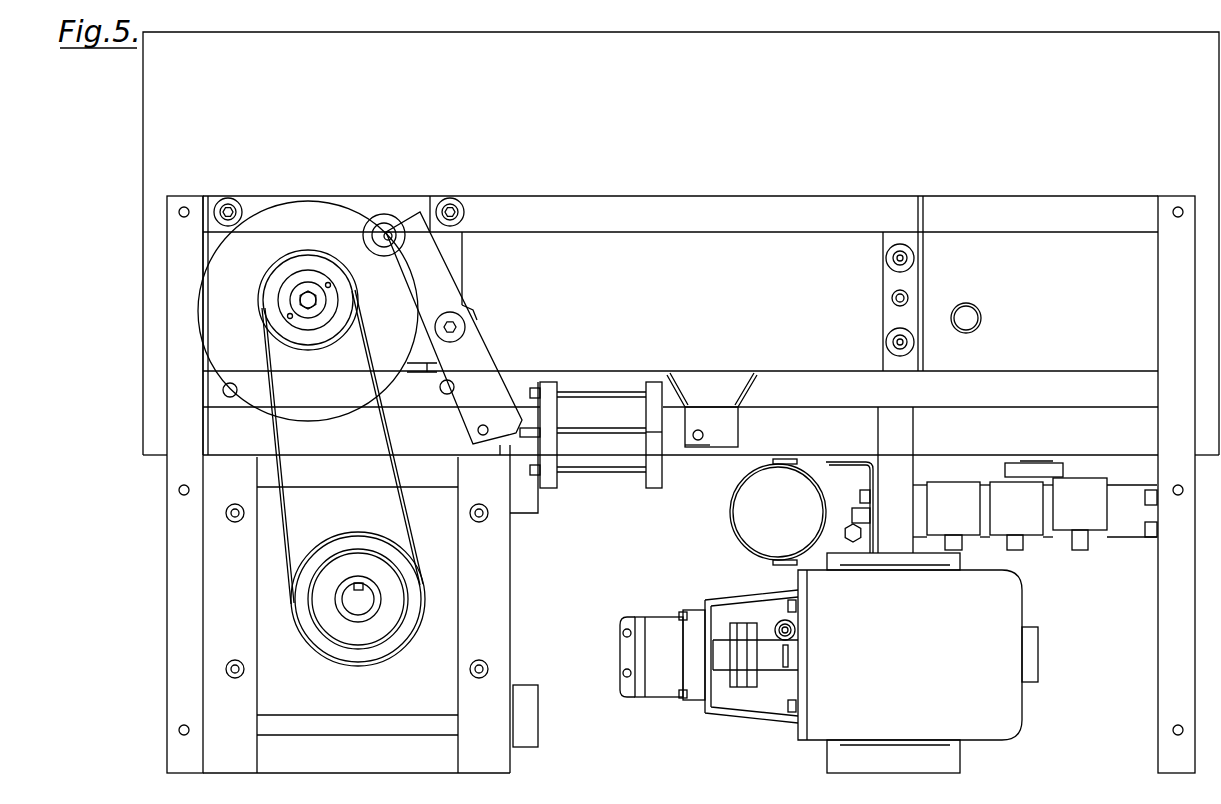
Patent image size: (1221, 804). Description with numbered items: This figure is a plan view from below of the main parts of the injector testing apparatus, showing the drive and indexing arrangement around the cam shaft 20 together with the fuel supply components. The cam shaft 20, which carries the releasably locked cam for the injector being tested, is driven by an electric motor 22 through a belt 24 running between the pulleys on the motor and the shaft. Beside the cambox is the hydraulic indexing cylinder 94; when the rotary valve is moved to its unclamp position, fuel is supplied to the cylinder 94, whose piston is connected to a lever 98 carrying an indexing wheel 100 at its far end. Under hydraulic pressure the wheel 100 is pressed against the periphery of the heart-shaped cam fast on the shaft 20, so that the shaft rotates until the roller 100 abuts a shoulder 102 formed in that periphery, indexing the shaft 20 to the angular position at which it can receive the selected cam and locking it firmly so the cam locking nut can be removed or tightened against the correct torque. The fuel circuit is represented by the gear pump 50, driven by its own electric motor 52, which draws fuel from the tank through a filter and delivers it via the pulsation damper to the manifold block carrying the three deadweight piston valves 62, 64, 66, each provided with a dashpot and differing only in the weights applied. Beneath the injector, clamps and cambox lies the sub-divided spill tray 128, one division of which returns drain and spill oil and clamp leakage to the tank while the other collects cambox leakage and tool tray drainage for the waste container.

The cam shaft 20 is at (285, 288).
The electric motor 22 is at (282, 617).
The belt 24 is at (393, 498).
The gear pump 50 is at (655, 630).
The electric motor 52 is at (990, 718).
The deadweight piston valve 62 is at (954, 488).
The deadweight piston valve 64 is at (1014, 490).
The deadweight piston valve 66 is at (1086, 490).
The hydraulic indexing cylinder 94 is at (605, 400).
The lever 98 is at (478, 356).
The indexing wheel 100 is at (385, 222).
The shoulder 102 is at (366, 238).
The spill tray 128 is at (683, 242).